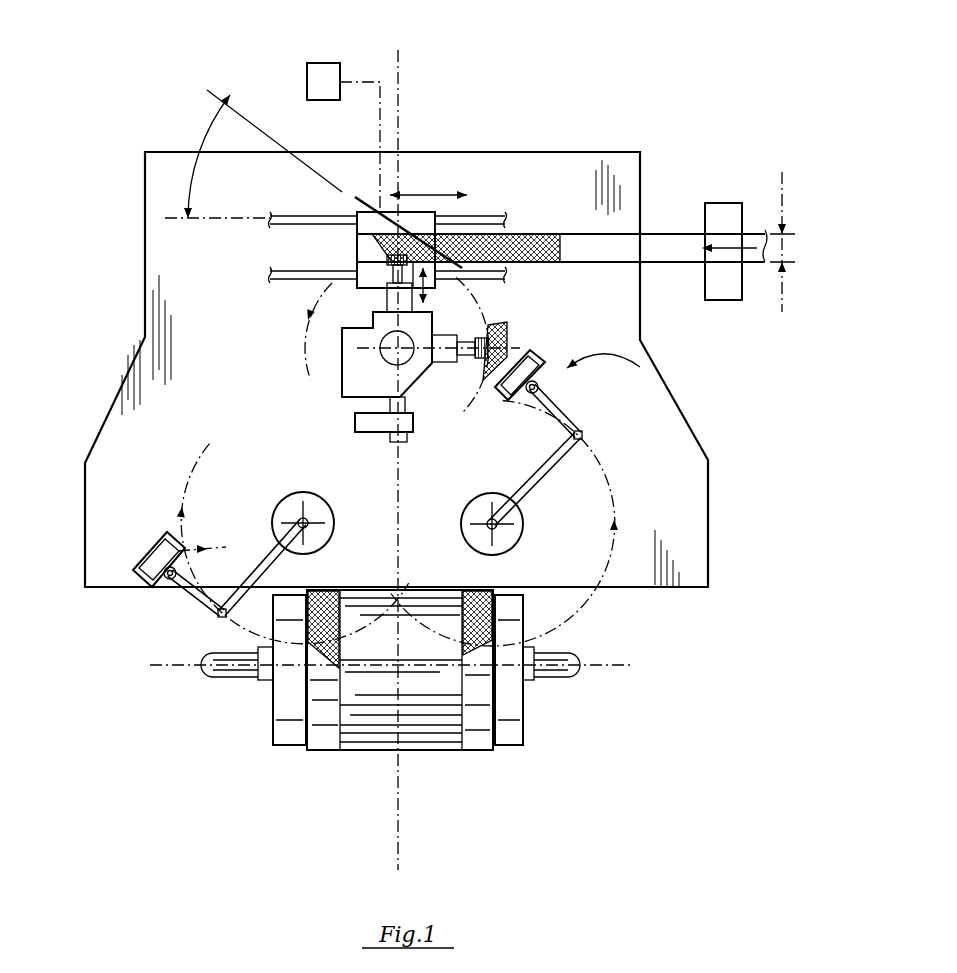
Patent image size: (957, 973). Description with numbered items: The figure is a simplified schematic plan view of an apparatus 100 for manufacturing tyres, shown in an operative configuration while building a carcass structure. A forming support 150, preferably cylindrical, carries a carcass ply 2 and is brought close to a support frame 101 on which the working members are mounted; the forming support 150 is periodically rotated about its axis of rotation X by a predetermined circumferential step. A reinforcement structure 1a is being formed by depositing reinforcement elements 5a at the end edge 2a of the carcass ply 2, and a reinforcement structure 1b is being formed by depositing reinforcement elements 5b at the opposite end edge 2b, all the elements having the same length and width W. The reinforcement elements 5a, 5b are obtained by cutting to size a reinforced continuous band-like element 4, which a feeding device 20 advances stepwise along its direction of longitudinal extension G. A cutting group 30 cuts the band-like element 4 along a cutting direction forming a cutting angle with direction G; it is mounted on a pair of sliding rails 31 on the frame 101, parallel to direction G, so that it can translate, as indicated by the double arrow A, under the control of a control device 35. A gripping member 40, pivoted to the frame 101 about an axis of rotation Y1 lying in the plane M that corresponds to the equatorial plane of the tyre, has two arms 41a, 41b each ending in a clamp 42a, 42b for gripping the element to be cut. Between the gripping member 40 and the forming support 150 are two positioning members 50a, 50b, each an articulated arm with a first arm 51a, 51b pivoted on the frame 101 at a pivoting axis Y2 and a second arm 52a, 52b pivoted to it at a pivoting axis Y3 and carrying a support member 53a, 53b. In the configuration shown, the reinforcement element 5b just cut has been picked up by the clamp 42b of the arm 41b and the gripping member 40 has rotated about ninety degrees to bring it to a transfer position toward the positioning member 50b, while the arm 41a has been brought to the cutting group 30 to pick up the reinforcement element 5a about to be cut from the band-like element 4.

The apparatus 100 is at (607, 108).
The support frame 101 is at (668, 430).
The reinforcement structure 1a is at (320, 723).
The reinforcement structure 1b is at (477, 730).
The carcass ply 2 is at (365, 720).
The end edge 2a is at (268, 752).
The end edge 2b is at (505, 757).
The reinforced continuous band-like element 4 is at (665, 250).
The reinforcement element 5a is at (363, 235).
The reinforcement element 5b is at (507, 333).
The feeding device 20 is at (720, 203).
The cutting group 30 is at (410, 212).
The sliding rails 31 is at (498, 222).
The control device 35 is at (315, 80).
The gripping member 40 is at (357, 382).
The arm 41a is at (390, 297).
The arm 41b is at (442, 357).
The clamp 42a is at (367, 260).
The clamp 42b is at (483, 332).
The positioning member 50a is at (175, 487).
The positioning member 50b is at (582, 484).
The first arm 51a is at (272, 550).
The first arm 51b is at (522, 515).
The second arm 52a is at (163, 615).
The second arm 52b is at (570, 410).
The support member 53a is at (153, 550).
The support member 53b is at (545, 352).
The forming support 150 is at (427, 757).
The plane M is at (400, 62).
The axis of rotation X is at (150, 670).
The double arrow A is at (422, 195).
The direction of longitudinal extension G is at (748, 250).
The width W is at (785, 246).
The axis of rotation Y1 is at (397, 348).
The pivoting axis Y2 is at (303, 522).
The pivoting axis Y3 is at (578, 435).